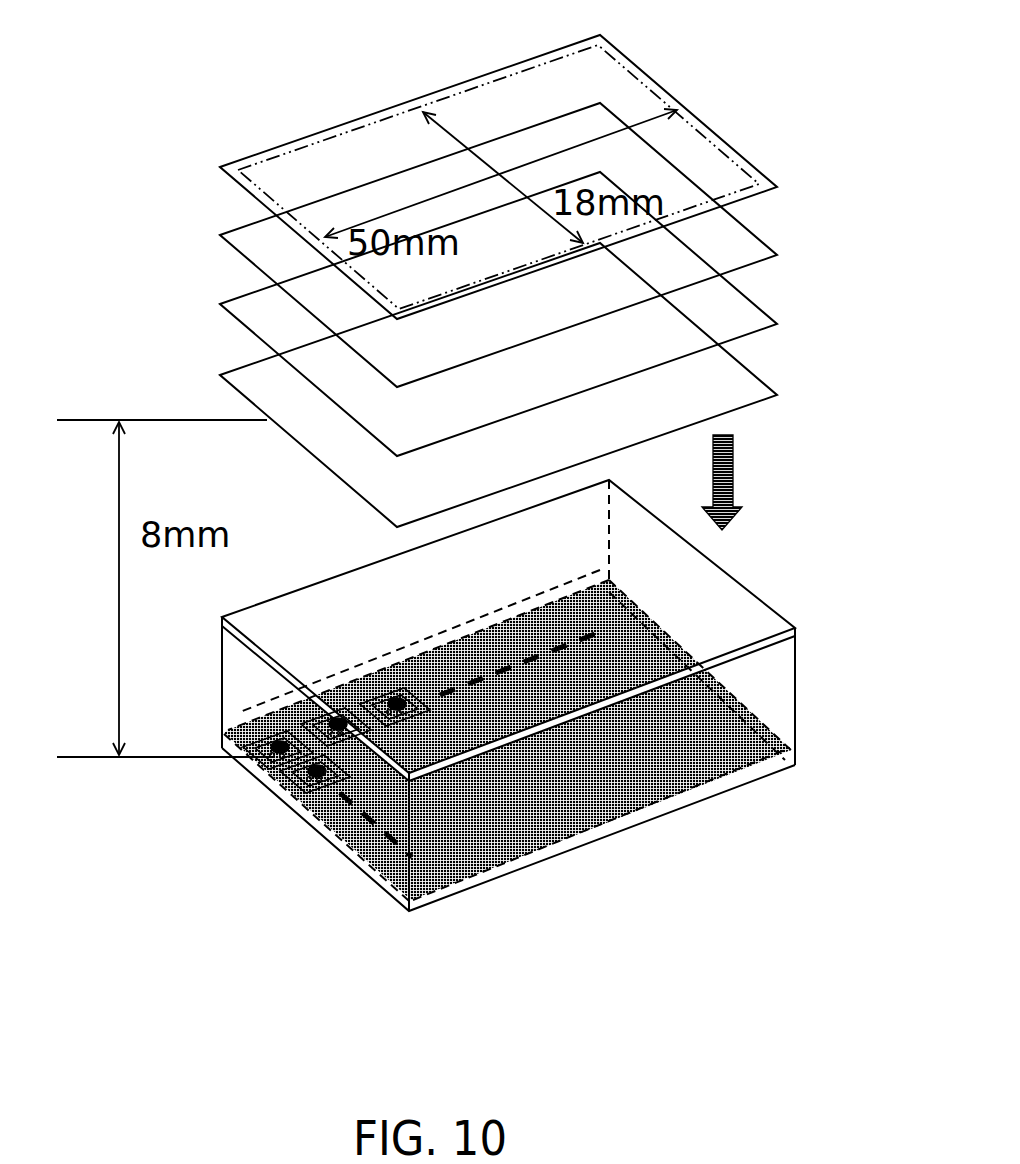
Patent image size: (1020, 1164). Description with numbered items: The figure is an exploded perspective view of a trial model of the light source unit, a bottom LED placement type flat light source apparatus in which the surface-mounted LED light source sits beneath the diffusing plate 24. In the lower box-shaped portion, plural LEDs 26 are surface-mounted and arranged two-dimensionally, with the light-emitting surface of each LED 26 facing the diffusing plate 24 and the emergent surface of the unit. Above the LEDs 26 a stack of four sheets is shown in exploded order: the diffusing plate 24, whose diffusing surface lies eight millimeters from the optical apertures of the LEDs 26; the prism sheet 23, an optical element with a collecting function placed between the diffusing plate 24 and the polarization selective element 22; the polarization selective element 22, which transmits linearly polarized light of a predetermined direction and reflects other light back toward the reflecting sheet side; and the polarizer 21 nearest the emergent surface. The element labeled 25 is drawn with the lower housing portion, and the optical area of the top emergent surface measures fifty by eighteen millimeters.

The polarizer 21 is at (688, 124).
The polarization selective element 22 is at (768, 244).
The prism sheet 23 is at (757, 316).
The diffusing plate 24 is at (757, 402).
The case 25 is at (765, 695).
The LED 26 is at (364, 774).